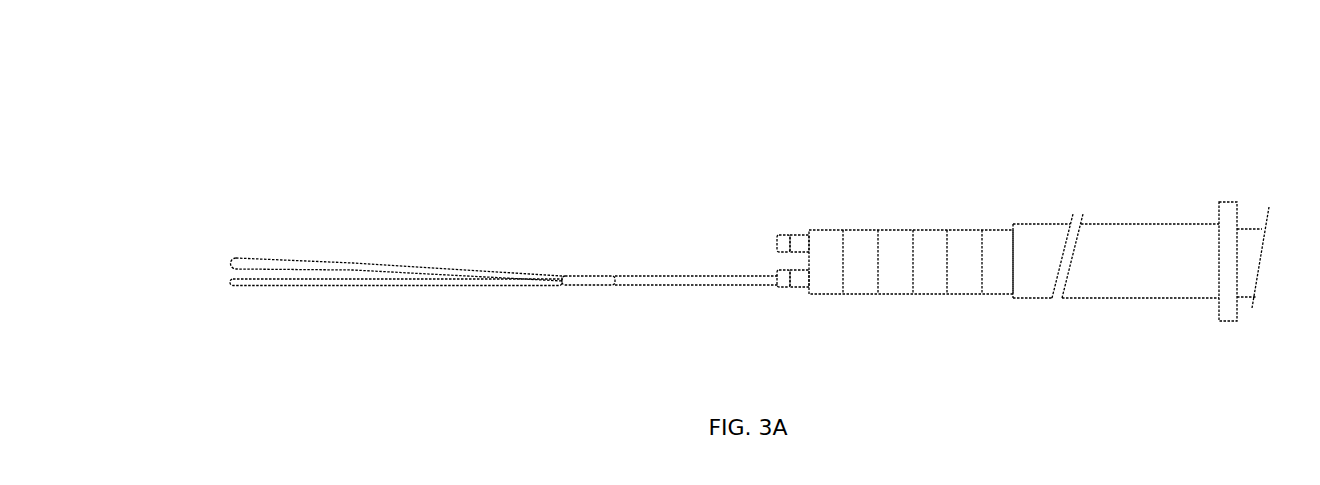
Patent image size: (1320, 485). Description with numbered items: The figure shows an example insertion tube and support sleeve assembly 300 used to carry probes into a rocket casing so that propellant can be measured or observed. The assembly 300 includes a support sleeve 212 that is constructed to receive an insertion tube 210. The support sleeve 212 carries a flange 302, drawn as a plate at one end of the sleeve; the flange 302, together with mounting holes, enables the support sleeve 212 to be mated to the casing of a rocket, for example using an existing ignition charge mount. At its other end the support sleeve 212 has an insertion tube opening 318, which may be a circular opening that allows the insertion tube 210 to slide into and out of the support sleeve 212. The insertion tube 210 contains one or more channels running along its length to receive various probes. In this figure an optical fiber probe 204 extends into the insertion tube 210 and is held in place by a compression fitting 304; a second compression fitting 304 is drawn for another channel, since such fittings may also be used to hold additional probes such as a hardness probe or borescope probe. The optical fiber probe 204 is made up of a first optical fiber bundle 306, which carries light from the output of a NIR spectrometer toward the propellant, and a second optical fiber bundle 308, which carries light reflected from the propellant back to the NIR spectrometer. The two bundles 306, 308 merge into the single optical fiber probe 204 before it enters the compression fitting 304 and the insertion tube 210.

The insertion tube and support sleeve assembly 300 is at (1240, 108).
The flange 302 is at (1228, 202).
The compression fitting 304 is at (775, 270).
The first optical fiber bundle 306 is at (229, 279).
The second optical fiber bundle 308 is at (225, 259).
The insertion tube opening 318 is at (988, 215).
The optical fiber probe 204 is at (737, 289).
The insertion tube 210 is at (928, 296).
The support sleeve 212 is at (1184, 298).